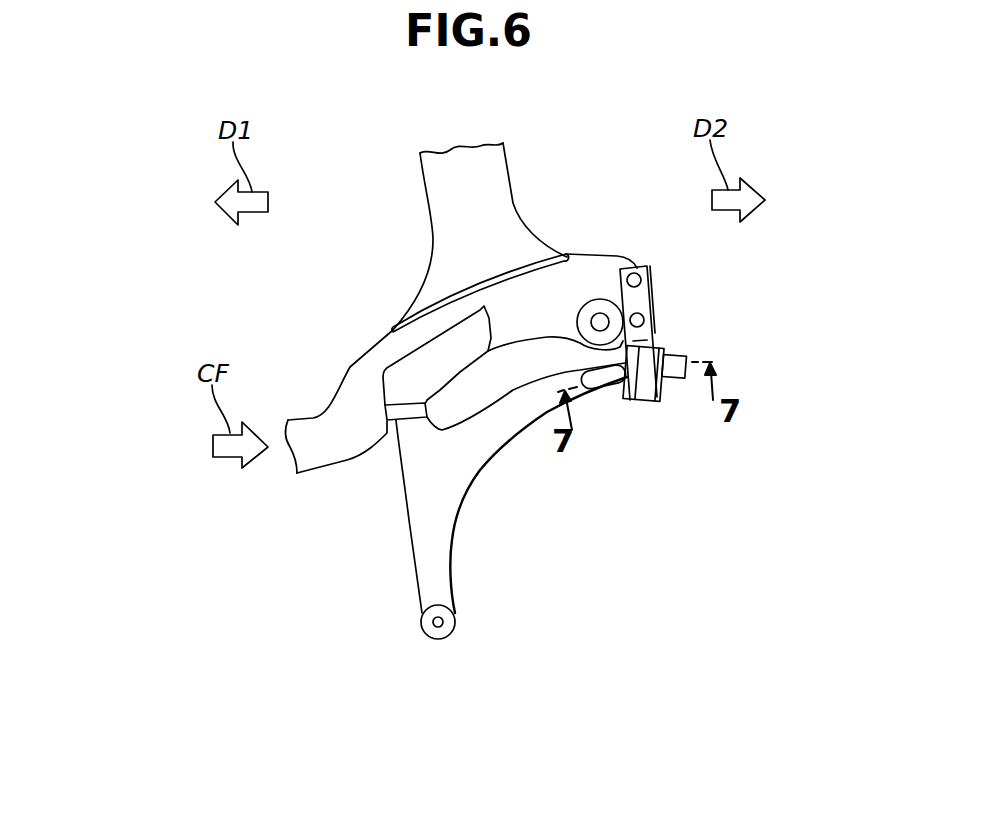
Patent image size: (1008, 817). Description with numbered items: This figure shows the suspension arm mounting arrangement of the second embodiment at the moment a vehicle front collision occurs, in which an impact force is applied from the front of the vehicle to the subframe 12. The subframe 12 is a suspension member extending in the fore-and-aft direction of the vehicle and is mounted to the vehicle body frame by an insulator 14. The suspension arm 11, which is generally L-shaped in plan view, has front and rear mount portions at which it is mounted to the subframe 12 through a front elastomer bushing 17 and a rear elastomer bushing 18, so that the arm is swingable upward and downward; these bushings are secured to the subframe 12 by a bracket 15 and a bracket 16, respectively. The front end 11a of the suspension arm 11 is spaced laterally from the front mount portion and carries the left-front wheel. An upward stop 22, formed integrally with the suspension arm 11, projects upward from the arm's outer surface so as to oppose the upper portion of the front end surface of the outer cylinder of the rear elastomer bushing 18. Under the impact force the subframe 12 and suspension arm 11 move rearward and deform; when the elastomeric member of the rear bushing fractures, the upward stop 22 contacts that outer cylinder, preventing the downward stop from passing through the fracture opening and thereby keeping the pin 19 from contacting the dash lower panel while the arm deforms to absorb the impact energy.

The suspension arm 11 is at (477, 483).
The front end 11a is at (455, 623).
The subframe 12 is at (354, 358).
The insulator 14 is at (600, 307).
The bracket 15 is at (450, 340).
The bracket 16 is at (638, 303).
The front elastomer bushing 17 is at (403, 415).
The rear elastomer bushing 18 is at (663, 401).
The pin 19 is at (679, 376).
The upward stop 22 is at (609, 384).